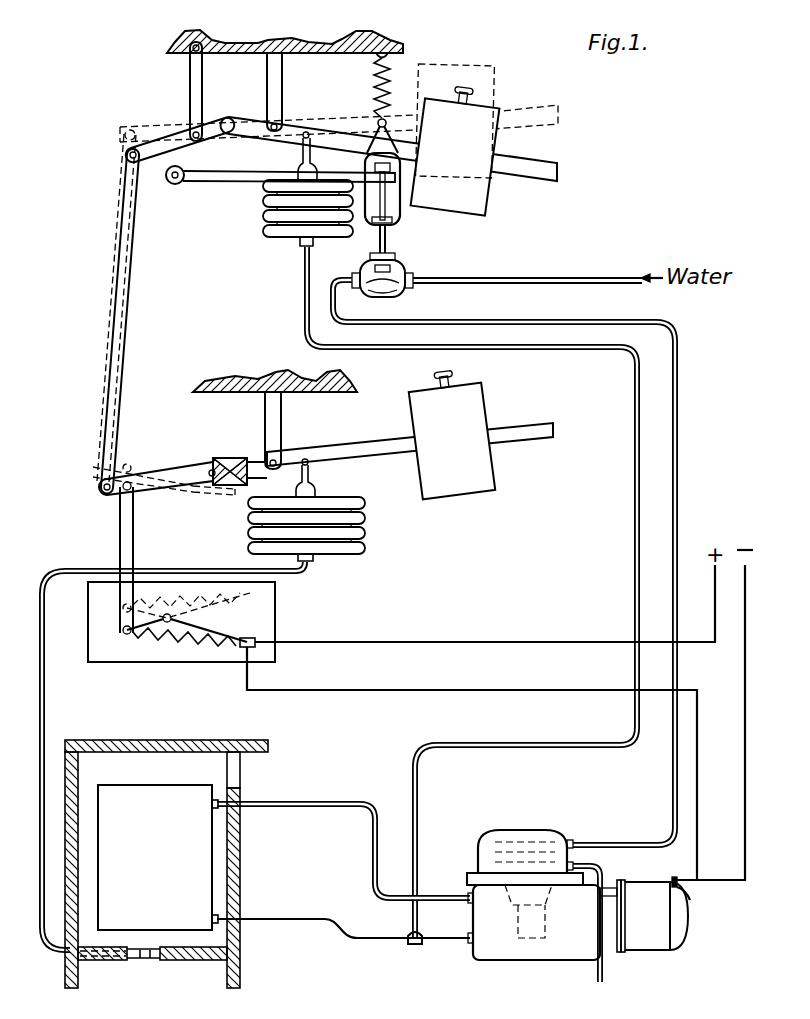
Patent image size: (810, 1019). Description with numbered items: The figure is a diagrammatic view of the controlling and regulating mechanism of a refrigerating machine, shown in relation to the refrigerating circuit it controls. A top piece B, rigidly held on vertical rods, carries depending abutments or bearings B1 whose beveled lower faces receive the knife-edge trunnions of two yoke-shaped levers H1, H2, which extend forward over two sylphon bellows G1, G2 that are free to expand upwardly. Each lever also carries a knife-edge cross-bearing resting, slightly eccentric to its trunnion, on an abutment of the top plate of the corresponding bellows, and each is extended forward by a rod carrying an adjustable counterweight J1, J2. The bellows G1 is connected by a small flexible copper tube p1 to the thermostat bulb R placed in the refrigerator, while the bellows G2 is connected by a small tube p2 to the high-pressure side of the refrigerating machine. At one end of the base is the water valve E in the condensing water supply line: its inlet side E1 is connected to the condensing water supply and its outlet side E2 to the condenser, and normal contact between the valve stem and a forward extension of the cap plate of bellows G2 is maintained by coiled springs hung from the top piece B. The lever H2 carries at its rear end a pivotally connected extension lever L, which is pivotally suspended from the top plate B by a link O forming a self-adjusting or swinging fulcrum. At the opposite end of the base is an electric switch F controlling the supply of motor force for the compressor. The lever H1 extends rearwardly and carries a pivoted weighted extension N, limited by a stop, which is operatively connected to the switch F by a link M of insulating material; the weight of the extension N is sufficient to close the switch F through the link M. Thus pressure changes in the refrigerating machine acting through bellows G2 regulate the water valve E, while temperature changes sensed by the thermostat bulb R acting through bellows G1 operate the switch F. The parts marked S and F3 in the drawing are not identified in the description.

The top piece B is at (288, 46).
The link O is at (203, 79).
The depending abutments or bearings B1 is at (276, 84).
The extension lever L is at (168, 135).
The yoke-shaped lever H2 is at (538, 168).
The adjustable counterweight J2 is at (480, 192).
The sylphon bellows G2 is at (263, 208).
The water valve E is at (404, 262).
The inlet side of water valve E1 is at (558, 278).
The outlet side of water valve E2 is at (677, 380).
The small tube p2 is at (412, 782).
The small flexible tube p1 is at (50, 583).
The weighted extension N is at (166, 473).
The yoke-shaped lever H1 is at (514, 427).
The adjustable counterweight J1 is at (483, 463).
The link M is at (131, 540).
The sylphon bellows G1 is at (357, 532).
The electric switch F is at (260, 615).
The casing S is at (133, 752).
The thermostat bulb R is at (143, 958).
The pump pipe F3 is at (603, 975).